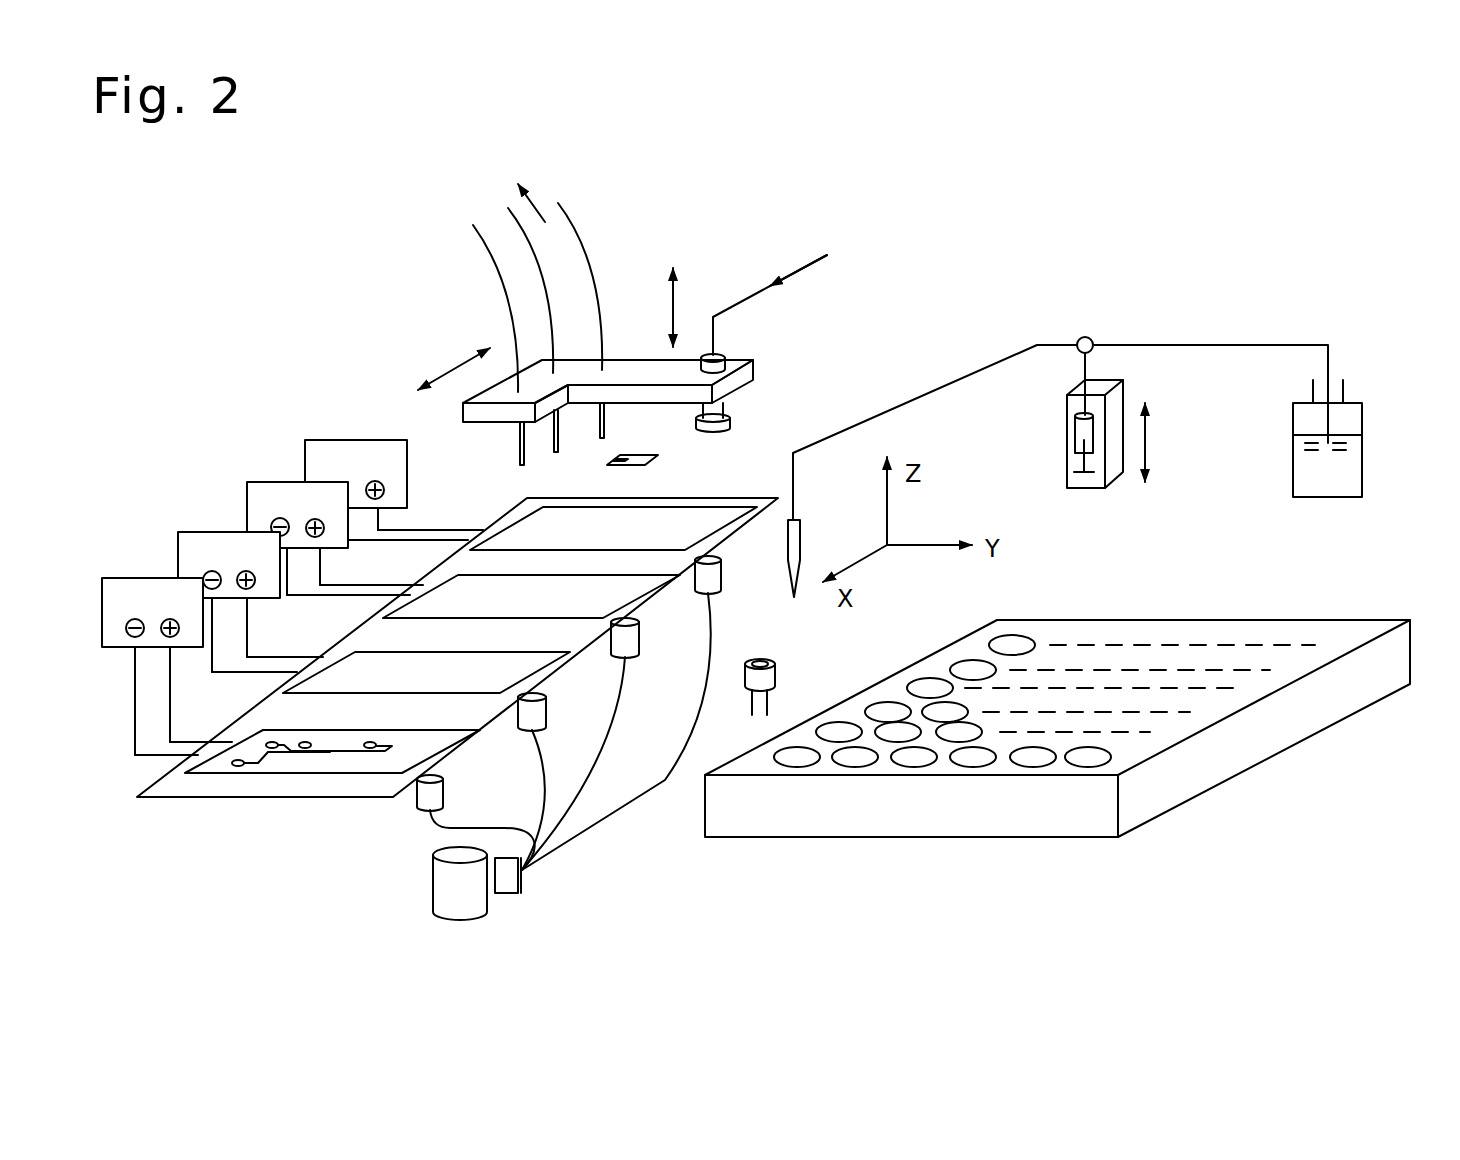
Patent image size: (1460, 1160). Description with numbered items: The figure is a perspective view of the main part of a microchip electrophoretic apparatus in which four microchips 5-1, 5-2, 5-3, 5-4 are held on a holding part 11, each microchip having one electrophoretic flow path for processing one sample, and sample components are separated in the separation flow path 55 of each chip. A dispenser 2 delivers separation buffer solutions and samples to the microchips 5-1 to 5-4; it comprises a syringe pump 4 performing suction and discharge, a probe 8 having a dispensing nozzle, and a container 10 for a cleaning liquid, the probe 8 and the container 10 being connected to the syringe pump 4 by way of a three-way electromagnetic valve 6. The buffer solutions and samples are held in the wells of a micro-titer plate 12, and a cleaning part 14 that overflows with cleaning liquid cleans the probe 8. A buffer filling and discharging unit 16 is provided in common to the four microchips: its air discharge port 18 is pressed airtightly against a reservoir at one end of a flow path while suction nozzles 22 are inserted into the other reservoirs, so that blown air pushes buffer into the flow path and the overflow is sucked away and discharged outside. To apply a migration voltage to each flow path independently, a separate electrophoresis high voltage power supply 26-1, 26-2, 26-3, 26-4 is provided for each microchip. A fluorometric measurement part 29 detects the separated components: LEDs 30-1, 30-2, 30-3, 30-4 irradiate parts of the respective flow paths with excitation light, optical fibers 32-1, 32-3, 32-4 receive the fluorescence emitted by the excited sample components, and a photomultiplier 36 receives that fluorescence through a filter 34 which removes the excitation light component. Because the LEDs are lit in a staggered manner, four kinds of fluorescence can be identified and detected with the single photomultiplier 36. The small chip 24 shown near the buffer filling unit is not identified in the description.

The dispenser 2 is at (937, 392).
The syringe pump 4 is at (1083, 433).
The microchip 5-1 is at (645, 517).
The microchip 5-2 is at (497, 608).
The microchip 5-3 is at (427, 687).
The microchip 5-4 is at (425, 750).
The three-way electromagnetic valve 6 is at (1082, 337).
The probe 8 is at (801, 536).
The container 10 is at (1350, 452).
The holding part 11 is at (192, 797).
The micro-titer plate 12 is at (1175, 620).
The cleaning part 14 is at (770, 682).
The buffer filling and discharging unit 16 is at (625, 367).
The air discharge port 18 is at (720, 410).
The suction nozzles 22 is at (513, 443).
The chip 24 is at (607, 467).
The electrophoresis high voltage power supply 26-1 is at (331, 448).
The electrophoresis high voltage power supply 26-2 is at (267, 485).
The electrophoresis high voltage power supply 26-3 is at (207, 537).
The electrophoresis high voltage power supply 26-4 is at (130, 587).
The fluorometric measurement part 29 is at (603, 838).
The LED 30-1 is at (713, 582).
The LED 30-2 is at (630, 643).
The LED 30-3 is at (540, 712).
The LED 30-4 is at (432, 792).
The optical fiber 32-1 is at (665, 780).
The optical fiber 32-3 is at (541, 773).
The optical fiber 32-4 is at (450, 828).
The filter 34 is at (505, 883).
The photomultiplier 36 is at (462, 915).
The separation flow path 55 is at (332, 753).